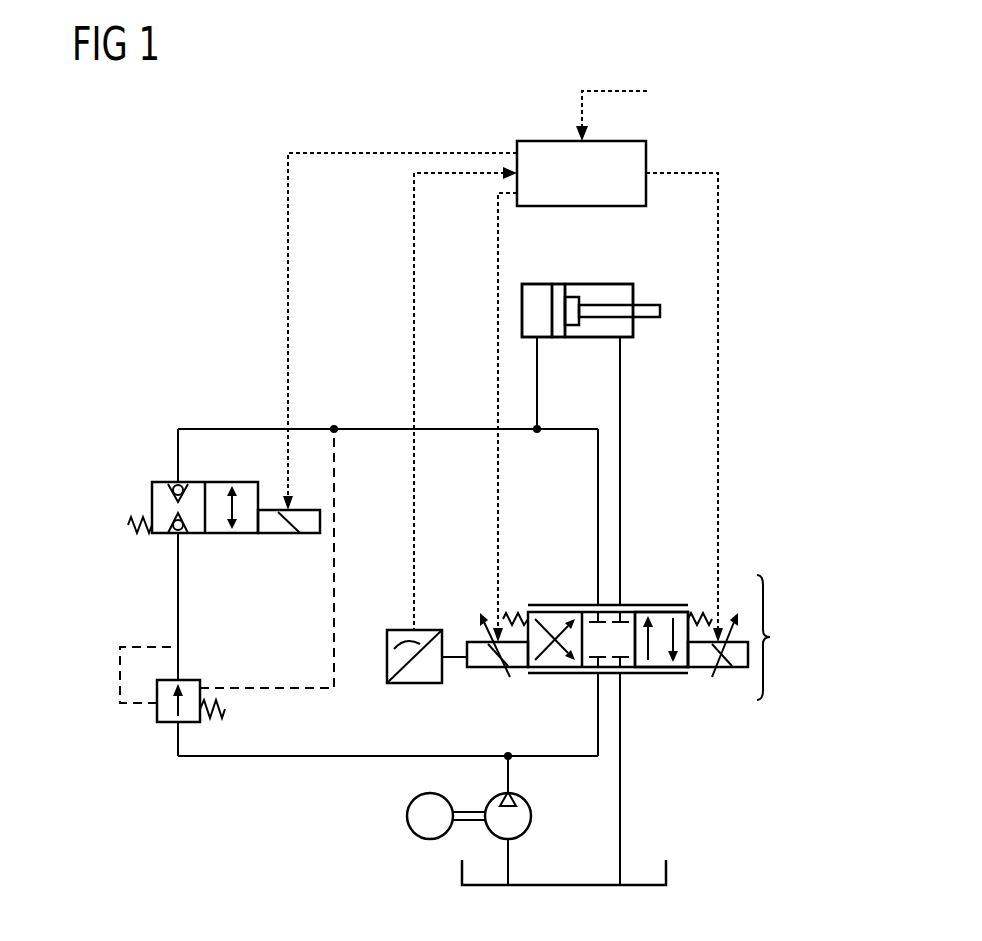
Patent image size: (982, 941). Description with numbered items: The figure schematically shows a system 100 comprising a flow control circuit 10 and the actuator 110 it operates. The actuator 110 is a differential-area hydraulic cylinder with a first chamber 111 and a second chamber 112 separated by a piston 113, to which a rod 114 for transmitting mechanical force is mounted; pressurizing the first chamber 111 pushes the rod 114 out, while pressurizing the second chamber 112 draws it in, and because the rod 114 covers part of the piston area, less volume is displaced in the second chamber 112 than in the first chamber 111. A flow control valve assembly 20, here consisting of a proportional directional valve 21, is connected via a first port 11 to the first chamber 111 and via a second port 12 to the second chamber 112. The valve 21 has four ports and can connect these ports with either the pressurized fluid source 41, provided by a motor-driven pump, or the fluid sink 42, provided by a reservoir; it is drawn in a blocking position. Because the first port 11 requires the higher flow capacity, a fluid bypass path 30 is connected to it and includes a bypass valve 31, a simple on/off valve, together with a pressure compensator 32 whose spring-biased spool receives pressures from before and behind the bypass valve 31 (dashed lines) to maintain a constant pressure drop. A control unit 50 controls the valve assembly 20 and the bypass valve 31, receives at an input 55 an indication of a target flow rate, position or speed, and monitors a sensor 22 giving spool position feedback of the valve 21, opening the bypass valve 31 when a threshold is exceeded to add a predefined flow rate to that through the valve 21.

The system 100 is at (712, 116).
The flow control circuit 10 is at (140, 392).
The first port 11 is at (537, 378).
The second port 12 is at (620, 378).
The flow control valve assembly 20 is at (634, 657).
The proportional directional valve 21 is at (667, 673).
The sensor 22 is at (415, 683).
The fluid bypass path 30 is at (377, 429).
The bypass valve 31 is at (162, 482).
The pressure compensator 32 is at (168, 722).
The pressurized fluid source 41 is at (531, 816).
The fluid sink 42 is at (666, 875).
The control unit 50 is at (556, 141).
The input 55 is at (615, 91).
The actuator 110 is at (613, 290).
The first chamber 111 is at (530, 288).
The second chamber 112 is at (625, 327).
The piston 113 is at (558, 290).
The rod 114 is at (648, 306).